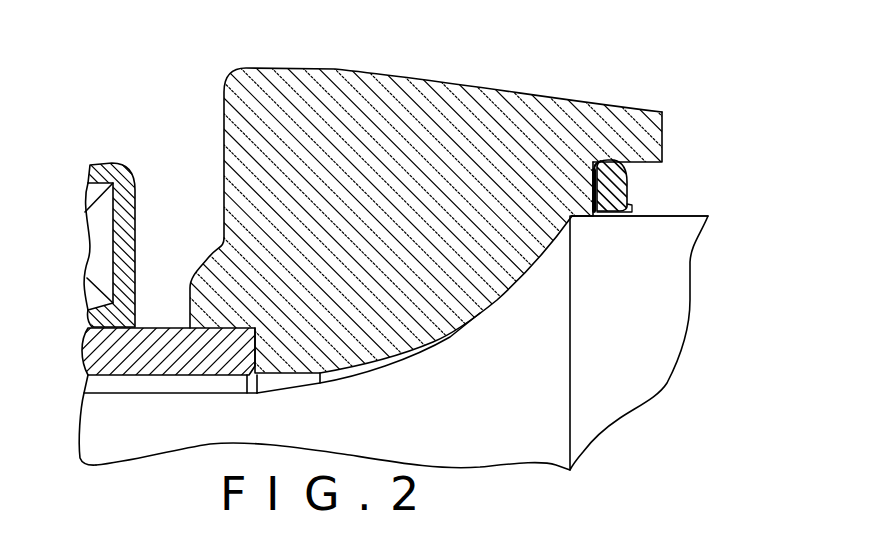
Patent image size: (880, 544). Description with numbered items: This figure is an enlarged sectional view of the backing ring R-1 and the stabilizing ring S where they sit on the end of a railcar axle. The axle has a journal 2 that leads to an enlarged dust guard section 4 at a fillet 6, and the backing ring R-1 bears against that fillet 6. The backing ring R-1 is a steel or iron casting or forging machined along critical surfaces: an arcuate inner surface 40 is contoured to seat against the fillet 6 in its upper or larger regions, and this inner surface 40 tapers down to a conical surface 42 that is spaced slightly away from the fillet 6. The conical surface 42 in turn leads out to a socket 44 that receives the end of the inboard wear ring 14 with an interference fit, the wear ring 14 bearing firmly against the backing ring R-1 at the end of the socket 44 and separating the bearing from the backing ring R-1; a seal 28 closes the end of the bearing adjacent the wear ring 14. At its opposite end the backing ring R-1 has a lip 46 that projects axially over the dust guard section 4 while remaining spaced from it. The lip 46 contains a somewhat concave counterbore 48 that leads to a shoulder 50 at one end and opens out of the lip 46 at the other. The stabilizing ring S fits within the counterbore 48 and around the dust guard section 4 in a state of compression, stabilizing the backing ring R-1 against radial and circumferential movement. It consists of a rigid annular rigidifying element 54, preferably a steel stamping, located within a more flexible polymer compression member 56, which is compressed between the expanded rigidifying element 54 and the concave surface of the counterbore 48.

The ring R-1 is at (290, 55).
The journal 2 is at (160, 433).
The dust guard section 4 is at (624, 369).
The fillet 6 is at (510, 427).
The wear ring 14 is at (160, 326).
The seal 28 is at (108, 162).
The arcuate inner surface 40 is at (537, 263).
The conical surface 42 is at (365, 358).
The socket 44 is at (223, 332).
The lip 46 is at (625, 123).
The counterbore 48 is at (650, 173).
The shoulder 50 is at (604, 217).
The rigidifying element 54 is at (613, 218).
The compression member 56 is at (605, 158).
The stabilizing ring S is at (629, 185).